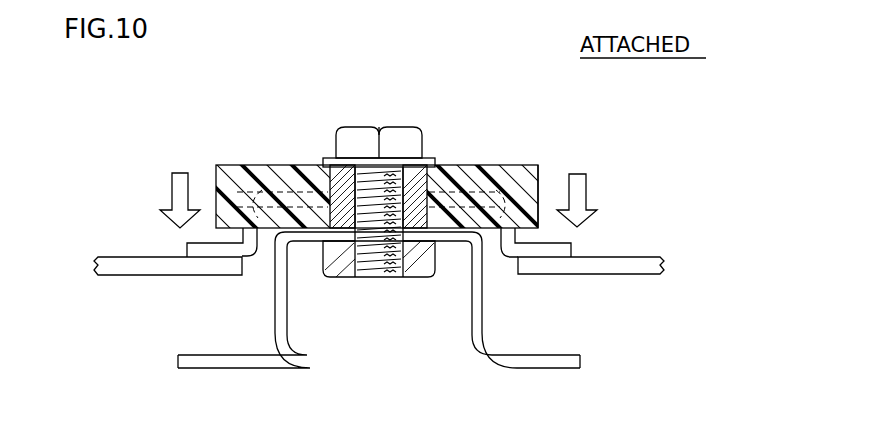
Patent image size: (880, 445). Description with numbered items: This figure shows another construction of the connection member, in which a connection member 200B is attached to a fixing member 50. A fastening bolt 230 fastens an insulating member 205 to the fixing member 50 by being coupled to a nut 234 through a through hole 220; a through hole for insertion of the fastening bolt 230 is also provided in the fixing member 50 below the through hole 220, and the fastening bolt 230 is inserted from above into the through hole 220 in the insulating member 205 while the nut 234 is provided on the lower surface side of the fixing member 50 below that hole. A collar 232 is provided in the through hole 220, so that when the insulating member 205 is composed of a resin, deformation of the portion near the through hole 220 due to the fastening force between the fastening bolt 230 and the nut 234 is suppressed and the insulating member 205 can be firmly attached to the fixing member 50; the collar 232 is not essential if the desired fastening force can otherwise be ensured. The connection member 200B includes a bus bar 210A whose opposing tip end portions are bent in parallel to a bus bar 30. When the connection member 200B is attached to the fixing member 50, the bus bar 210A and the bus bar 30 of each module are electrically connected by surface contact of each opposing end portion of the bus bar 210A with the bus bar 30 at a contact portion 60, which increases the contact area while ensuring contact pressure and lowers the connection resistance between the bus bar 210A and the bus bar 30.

The connection member 200B is at (444, 101).
The bus bar 210A is at (259, 208).
The collar 232 is at (330, 187).
The fastening bolt 230 is at (358, 138).
The insulating member 205 is at (524, 182).
The through hole 220 is at (350, 262).
The nut 234 is at (420, 262).
The bus bar 30 is at (112, 264).
The contact portion 60 is at (208, 285).
The fixing member 50 is at (290, 317).